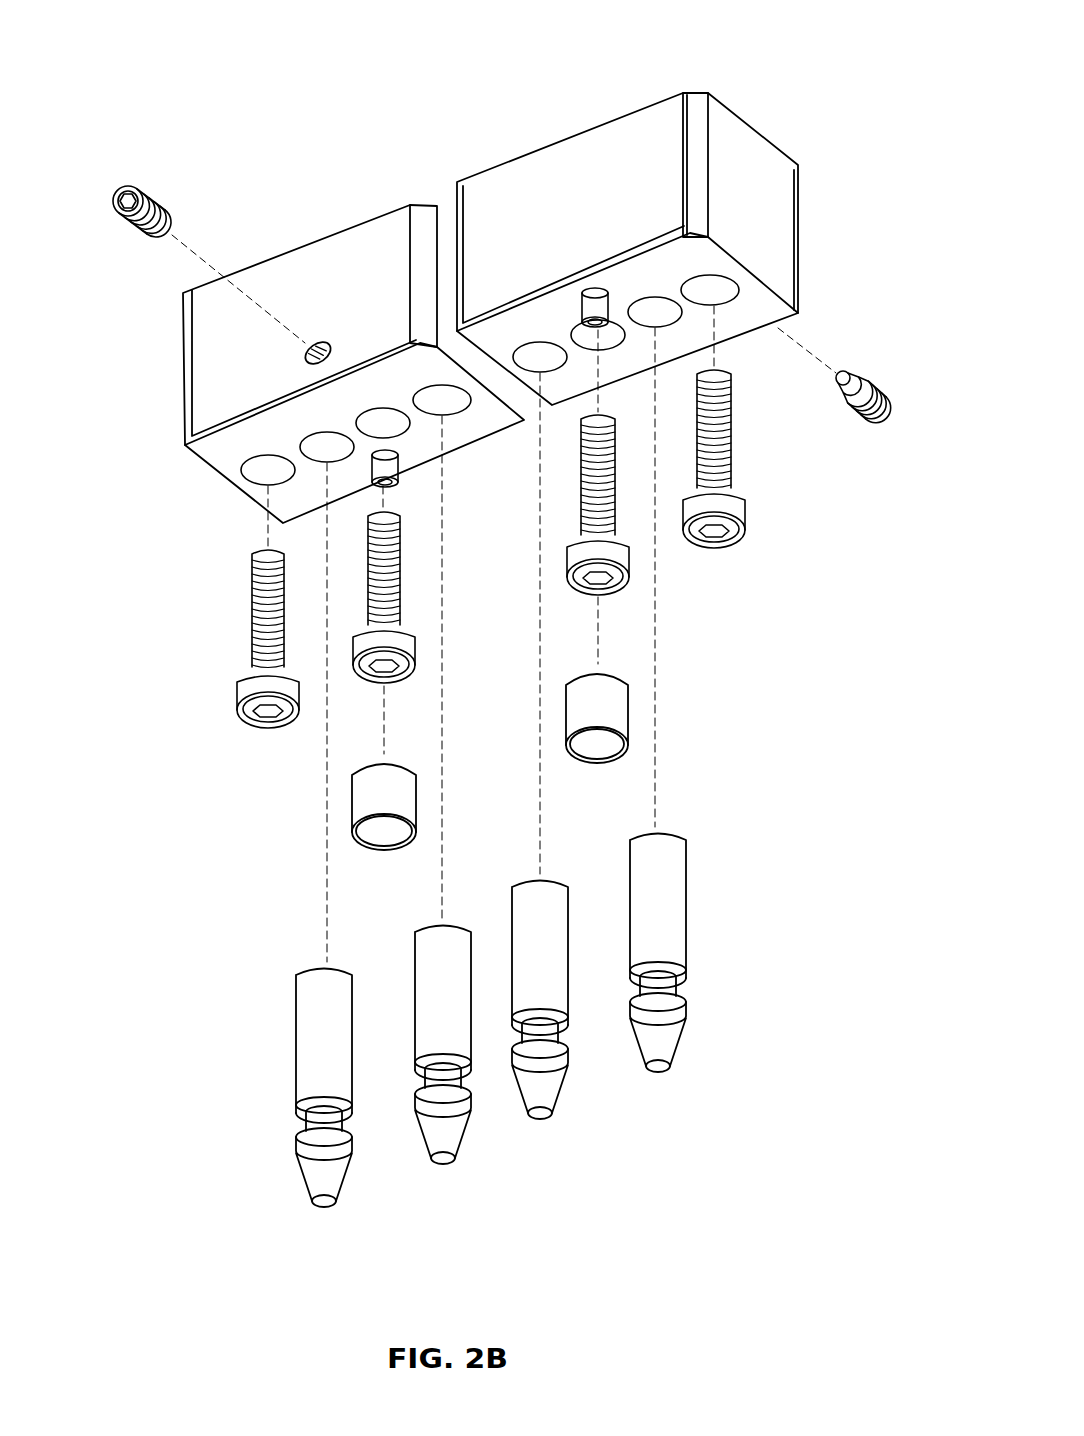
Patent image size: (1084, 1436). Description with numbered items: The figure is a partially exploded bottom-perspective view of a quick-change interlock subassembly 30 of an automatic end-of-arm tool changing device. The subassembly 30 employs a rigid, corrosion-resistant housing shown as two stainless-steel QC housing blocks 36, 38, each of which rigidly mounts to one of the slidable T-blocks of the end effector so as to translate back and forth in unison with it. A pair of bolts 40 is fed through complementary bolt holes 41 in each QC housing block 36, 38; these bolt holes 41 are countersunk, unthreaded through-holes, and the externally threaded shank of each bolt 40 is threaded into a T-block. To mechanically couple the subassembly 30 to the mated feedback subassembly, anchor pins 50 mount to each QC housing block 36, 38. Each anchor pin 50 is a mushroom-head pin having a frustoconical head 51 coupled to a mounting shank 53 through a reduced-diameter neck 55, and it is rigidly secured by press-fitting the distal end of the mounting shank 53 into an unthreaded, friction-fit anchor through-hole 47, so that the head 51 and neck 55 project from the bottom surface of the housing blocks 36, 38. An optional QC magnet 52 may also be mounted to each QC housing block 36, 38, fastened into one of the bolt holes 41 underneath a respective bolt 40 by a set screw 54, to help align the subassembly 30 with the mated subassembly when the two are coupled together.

The quick-change interlock subassembly 30 is at (255, 87).
The QC housing block 36 is at (352, 240).
The QC housing block 38 is at (623, 127).
The bolt 40 is at (290, 713).
The bolt hole 41 is at (252, 458).
The anchor through-hole 47 is at (307, 432).
The anchor pin 50 is at (496, 1076).
The frustoconical head 51 is at (310, 1180).
The QC magnet 52 is at (372, 838).
The mounting shank 53 is at (305, 1050).
The set screw 54 is at (150, 192).
The reduced-diameter neck 55 is at (308, 1133).